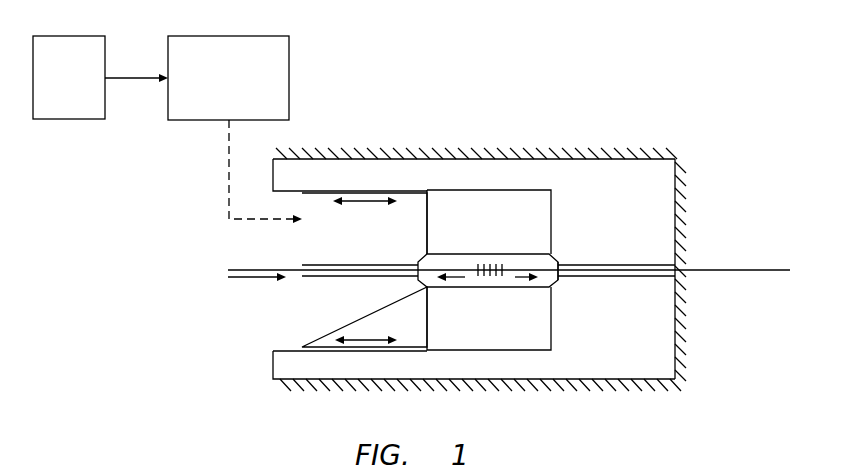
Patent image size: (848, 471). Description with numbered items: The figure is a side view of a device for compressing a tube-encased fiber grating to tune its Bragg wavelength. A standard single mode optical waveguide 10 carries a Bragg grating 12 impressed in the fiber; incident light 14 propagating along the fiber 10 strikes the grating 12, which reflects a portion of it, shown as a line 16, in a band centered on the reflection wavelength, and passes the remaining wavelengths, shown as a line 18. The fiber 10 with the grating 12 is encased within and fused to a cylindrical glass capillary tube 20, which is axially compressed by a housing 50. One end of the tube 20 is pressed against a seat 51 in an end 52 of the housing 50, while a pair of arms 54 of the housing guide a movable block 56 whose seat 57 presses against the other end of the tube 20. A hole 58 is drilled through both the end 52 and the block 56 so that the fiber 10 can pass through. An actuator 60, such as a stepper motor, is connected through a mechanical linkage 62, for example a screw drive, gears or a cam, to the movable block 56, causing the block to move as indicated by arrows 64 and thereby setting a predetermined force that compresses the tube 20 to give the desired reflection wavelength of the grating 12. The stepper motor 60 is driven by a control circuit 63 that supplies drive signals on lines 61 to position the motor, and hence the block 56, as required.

The optical waveguide 10 is at (262, 268).
The Bragg grating 12 is at (491, 277).
The light 14 is at (247, 283).
The reflected light 16 is at (452, 283).
The transmitted light 18 is at (520, 283).
The cylindrical glass capillary tube 20 is at (498, 246).
The housing 50 is at (498, 251).
The seat 51 is at (558, 284).
The end 52 is at (660, 200).
The arms 54 is at (483, 168).
The movable block 56 is at (344, 243).
The seat 57 is at (418, 284).
The hole 58 is at (370, 264).
The actuator 60 is at (289, 76).
The lines 61 is at (148, 77).
The mechanical linkage 62 is at (229, 170).
The control circuit 63 is at (78, 119).
The arrows 64 is at (364, 200).